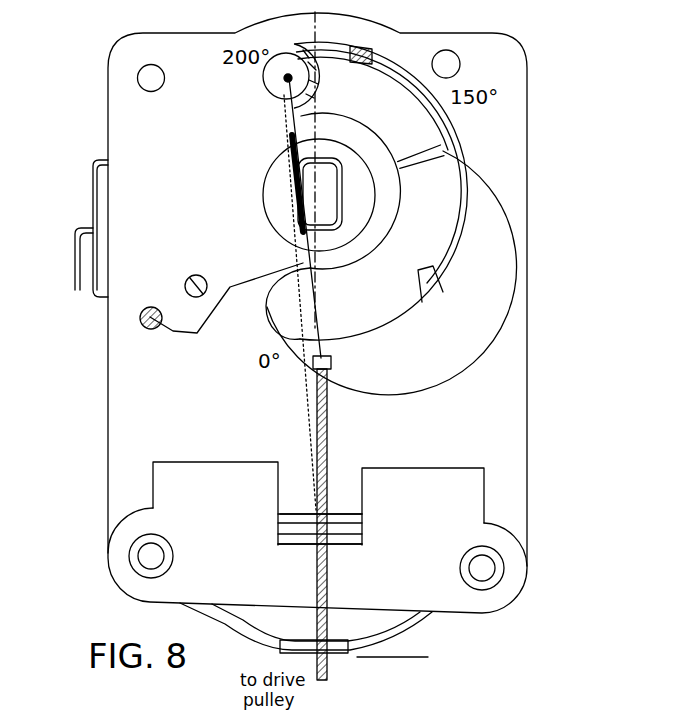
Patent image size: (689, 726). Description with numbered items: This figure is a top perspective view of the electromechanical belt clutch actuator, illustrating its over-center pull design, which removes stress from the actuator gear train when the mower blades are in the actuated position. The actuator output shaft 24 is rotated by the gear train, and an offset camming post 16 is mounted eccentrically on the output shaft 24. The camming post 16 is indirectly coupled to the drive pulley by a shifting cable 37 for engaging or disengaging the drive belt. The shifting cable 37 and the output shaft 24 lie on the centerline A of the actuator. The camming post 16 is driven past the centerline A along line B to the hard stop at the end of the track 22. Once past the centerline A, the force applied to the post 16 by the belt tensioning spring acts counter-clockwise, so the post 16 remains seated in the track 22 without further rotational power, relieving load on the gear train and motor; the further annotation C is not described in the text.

The offset camming post 16 is at (277, 93).
The track 22 is at (255, 80).
The output shaft 24 is at (340, 198).
The shifting cable 37 is at (328, 658).
The centerline A is at (150, 317).
The line B is at (308, 395).
The rod guide rails C is at (328, 508).